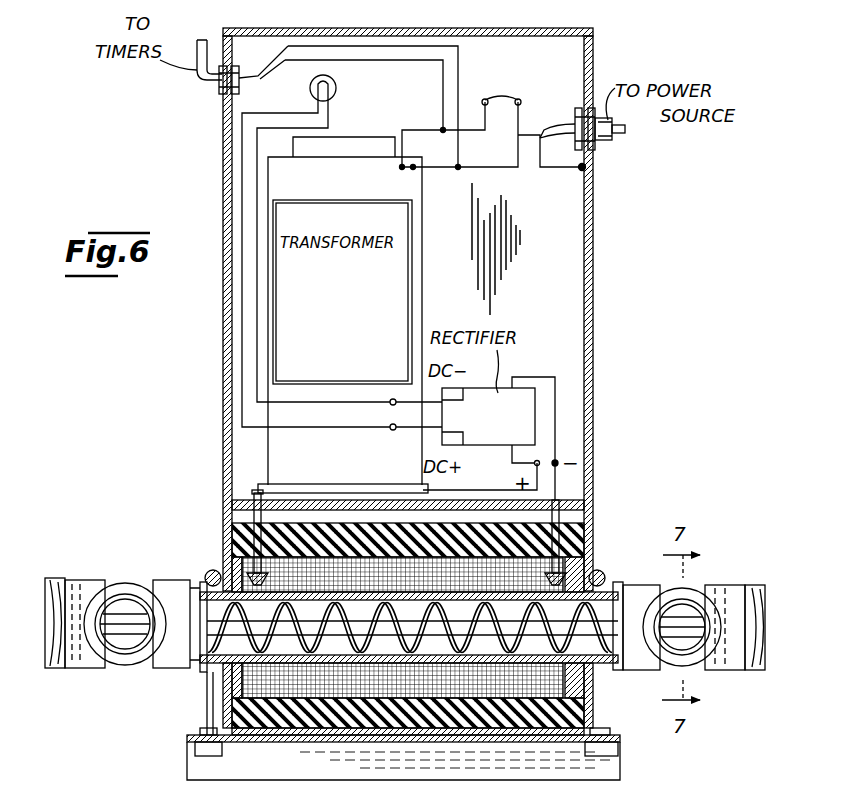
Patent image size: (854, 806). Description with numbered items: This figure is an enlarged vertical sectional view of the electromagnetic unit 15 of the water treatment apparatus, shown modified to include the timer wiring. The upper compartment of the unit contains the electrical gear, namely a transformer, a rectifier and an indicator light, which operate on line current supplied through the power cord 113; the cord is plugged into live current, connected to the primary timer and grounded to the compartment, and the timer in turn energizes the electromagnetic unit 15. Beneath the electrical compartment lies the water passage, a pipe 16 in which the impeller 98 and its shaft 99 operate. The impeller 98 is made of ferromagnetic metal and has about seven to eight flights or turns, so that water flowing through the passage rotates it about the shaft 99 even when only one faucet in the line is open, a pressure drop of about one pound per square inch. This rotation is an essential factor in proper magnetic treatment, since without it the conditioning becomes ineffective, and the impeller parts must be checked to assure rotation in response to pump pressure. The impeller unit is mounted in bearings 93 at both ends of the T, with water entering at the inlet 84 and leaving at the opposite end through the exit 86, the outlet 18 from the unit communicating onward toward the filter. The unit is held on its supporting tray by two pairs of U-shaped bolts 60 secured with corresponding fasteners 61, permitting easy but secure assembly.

The electromagnetic unit 15 is at (219, 351).
The pipe 16 is at (600, 668).
The outlet 18 is at (205, 670).
The U-shaped bolts 60 is at (208, 572).
The fasteners 61 is at (232, 749).
The inlet 84 is at (693, 655).
The exit 86 is at (122, 648).
The bearings 93 is at (84, 594).
The impeller 98 is at (368, 612).
The shaft 99 is at (470, 642).
The power cord 113 is at (612, 138).